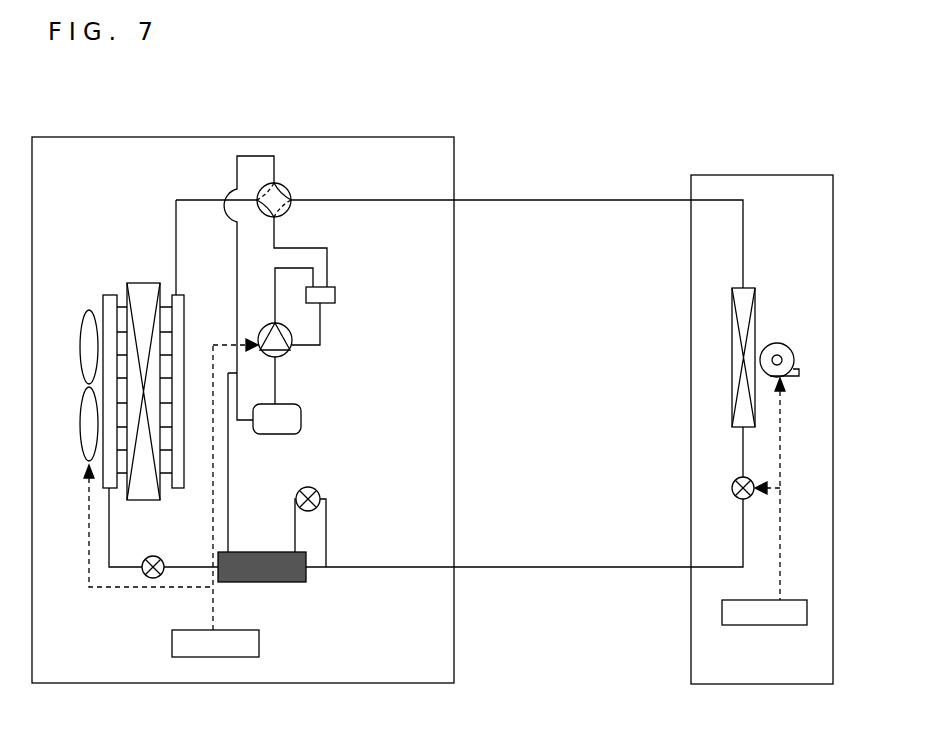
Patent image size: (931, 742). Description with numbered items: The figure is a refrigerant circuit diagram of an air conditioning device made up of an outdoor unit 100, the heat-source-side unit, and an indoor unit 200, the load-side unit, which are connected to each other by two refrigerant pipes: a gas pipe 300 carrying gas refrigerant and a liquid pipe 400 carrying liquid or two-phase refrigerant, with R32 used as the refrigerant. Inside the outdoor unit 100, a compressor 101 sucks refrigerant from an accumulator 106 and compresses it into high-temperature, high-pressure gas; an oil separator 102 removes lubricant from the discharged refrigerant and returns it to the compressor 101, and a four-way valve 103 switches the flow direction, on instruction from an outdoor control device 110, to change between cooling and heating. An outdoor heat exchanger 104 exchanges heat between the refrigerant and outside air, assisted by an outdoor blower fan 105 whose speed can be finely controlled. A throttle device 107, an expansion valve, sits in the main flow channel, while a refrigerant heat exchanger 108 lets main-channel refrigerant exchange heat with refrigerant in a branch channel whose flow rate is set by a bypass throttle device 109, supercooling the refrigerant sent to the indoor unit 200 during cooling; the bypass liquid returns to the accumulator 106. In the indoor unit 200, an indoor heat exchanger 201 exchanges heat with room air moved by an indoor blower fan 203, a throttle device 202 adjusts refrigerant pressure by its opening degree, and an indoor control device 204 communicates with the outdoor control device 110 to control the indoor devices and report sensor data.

The outdoor unit 100 is at (454, 642).
The compressor 101 is at (284, 354).
The oil separator 102 is at (330, 304).
The four-way valve 103 is at (288, 189).
The outdoor heat exchanger 104 is at (145, 500).
The outdoor blower fan 105 is at (88, 318).
The accumulator 106 is at (301, 420).
The throttle device (expansion valve) 107 is at (146, 559).
The refrigerant heat exchanger 108 is at (306, 576).
The bypass throttle device 109 is at (296, 499).
The outdoor control device 110 is at (259, 635).
The indoor unit 200 is at (720, 685).
The indoor heat exchanger 201 is at (737, 428).
The throttle device (expansion valve) 202 is at (738, 500).
The indoor blower fan 203 is at (781, 343).
The indoor control device 204 is at (775, 626).
The gas pipe 300 is at (535, 201).
The liquid pipe 400 is at (552, 566).